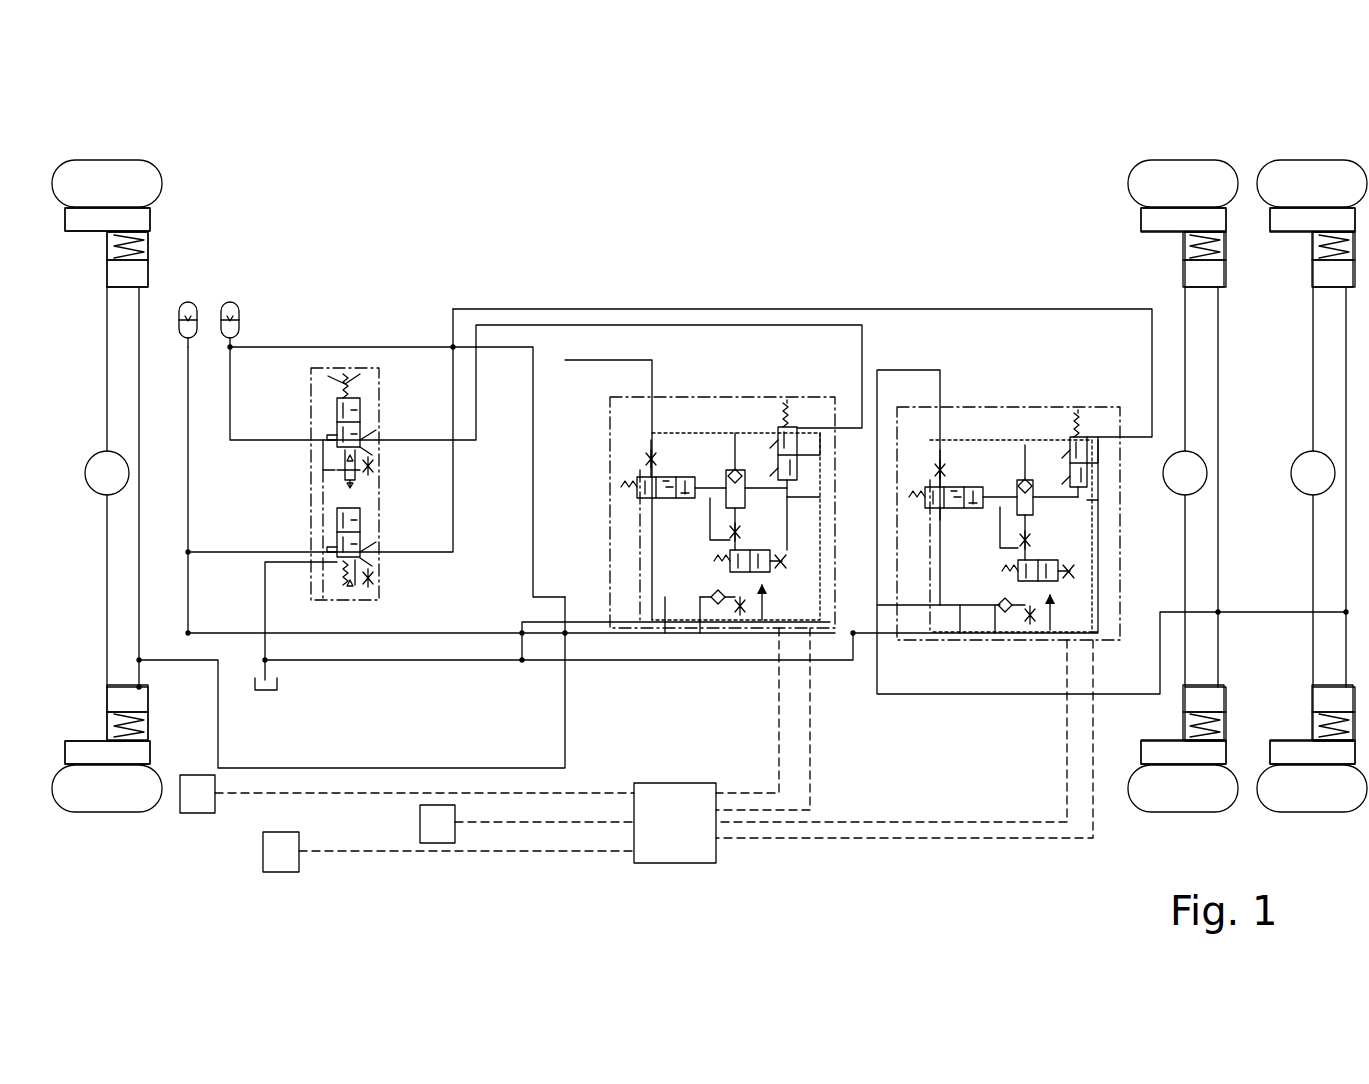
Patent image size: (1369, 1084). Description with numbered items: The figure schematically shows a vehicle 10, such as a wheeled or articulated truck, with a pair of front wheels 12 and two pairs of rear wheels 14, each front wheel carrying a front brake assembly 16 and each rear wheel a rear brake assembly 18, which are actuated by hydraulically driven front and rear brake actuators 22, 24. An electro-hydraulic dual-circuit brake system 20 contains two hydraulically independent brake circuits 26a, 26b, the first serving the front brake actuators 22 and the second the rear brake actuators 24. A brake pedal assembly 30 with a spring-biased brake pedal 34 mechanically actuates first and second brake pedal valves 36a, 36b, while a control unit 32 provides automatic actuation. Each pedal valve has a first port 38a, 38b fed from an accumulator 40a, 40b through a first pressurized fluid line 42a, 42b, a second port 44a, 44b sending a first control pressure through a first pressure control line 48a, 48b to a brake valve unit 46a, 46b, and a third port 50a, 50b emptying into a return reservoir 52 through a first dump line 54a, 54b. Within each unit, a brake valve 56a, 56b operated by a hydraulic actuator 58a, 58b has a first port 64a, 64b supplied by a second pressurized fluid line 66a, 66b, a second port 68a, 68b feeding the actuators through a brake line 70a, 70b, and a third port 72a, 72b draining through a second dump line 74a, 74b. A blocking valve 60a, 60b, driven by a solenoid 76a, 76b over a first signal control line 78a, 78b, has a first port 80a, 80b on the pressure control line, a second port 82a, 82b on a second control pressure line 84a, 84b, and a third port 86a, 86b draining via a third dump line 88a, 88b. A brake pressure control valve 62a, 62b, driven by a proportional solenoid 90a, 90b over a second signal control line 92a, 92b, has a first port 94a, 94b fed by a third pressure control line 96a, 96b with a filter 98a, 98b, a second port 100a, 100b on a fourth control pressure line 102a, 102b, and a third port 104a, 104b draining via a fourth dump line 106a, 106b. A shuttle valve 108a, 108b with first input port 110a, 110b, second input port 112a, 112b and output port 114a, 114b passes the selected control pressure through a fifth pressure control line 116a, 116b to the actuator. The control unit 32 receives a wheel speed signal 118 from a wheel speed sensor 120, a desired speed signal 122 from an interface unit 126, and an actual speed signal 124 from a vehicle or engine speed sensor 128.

The vehicle 10 is at (183, 125).
The front wheel 12 is at (107, 486).
The rear wheel 14 is at (1247, 486).
The front brake assembly 16 is at (135, 212).
The rear brake assembly 18 is at (1222, 215).
The brake system 20 is at (272, 175).
The front brake actuator 22 is at (117, 273).
The rear brake actuator 24 is at (1220, 275).
The first hydraulic brake circuit 26a is at (647, 250).
The second hydraulic brake circuit 26b is at (940, 752).
The brake pedal assembly 30 is at (320, 368).
The control unit 32 is at (675, 823).
The brake pedal 34 is at (355, 380).
The first brake pedal valve 36a is at (337, 412).
The second brake pedal valve 36b is at (337, 528).
The first port of first brake pedal valve 38a is at (337, 440).
The first port of second brake pedal valve 38b is at (337, 553).
The accumulator of first circuit 40a is at (230, 302).
The accumulator of second circuit 40b is at (188, 302).
The first pressurized fluid line of first circuit 42a is at (228, 410).
The first pressurized fluid line of second circuit 42b is at (186, 440).
The second port of first brake pedal valve 44a is at (360, 447).
The second port of second brake pedal valve 44b is at (360, 560).
The brake valve unit of first circuit 46a is at (772, 395).
The brake valve unit of second circuit 46b is at (1062, 400).
The first pressure control line of first circuit 48a is at (612, 325).
The first pressure control line of second circuit 48b is at (960, 309).
The third port of first brake pedal valve 50a is at (337, 452).
The third port of second brake pedal valve 50b is at (340, 572).
The return reservoir 52 is at (265, 692).
The first dump line of first circuit 54a is at (323, 488).
The first dump line of second circuit 54b is at (290, 565).
The brake valve of first circuit 56a is at (630, 487).
The brake valve of second circuit 56b is at (920, 497).
The hydraulic actuator of first brake valve 58a is at (692, 500).
The hydraulic actuator of second brake valve 58b is at (990, 505).
The blocking valve of first circuit 60a is at (797, 395).
The blocking valve of second circuit 60b is at (1085, 400).
The brake pressure control valve of first circuit 62a is at (762, 622).
The brake pressure control valve of second circuit 62b is at (1050, 632).
The first port of first brake valve 64a is at (652, 500).
The first port of second brake valve 64b is at (945, 520).
The second pressurized fluid line of first circuit 66a is at (497, 347).
The second pressurized fluid line of second circuit 66b is at (440, 636).
The second port of first brake valve 68a is at (655, 475).
The second port of second brake valve 68b is at (942, 484).
The brake line of first circuit 70a is at (565, 730).
The brake line of second circuit 70b is at (910, 696).
The third port of first brake valve 72a is at (645, 495).
The third port of second brake valve 72b is at (935, 505).
The second dump line of first circuit 74a is at (640, 548).
The second dump line of second circuit 74b is at (930, 555).
The solenoid of first blocking valve 76a is at (792, 490).
The solenoid of second blocking valve 76b is at (1085, 492).
The first signal control line of first circuit 78a is at (810, 742).
The first signal control line of second circuit 78b is at (875, 843).
The first port of first blocking valve 80a is at (797, 435).
The first port of second blocking valve 80b is at (1087, 445).
The second port of first blocking valve 82a is at (780, 430).
The second port of second blocking valve 82b is at (1072, 440).
The second control pressure line of first circuit 84a is at (735, 468).
The second control pressure line of second circuit 84b is at (1025, 478).
The third port of first blocking valve 86a is at (800, 452).
The third port of second blocking valve 86b is at (1090, 463).
The third dump line of first circuit 88a is at (822, 497).
The third dump line of second circuit 88b is at (1100, 500).
The proportional solenoid of first brake pressure control valve 90a is at (772, 568).
The proportional solenoid of second brake pressure control valve 90b is at (1062, 568).
The second signal control line of first circuit 92a is at (779, 742).
The second signal control line of second circuit 92b is at (928, 840).
The first port of first brake pressure control valve 94a is at (730, 565).
The first port of second brake pressure control valve 94b is at (1018, 575).
The third pressure control line of first circuit 96a is at (665, 620).
The third pressure control line of second circuit 96b is at (960, 636).
The filter of first circuit 98a is at (700, 622).
The filter of second circuit 98b is at (995, 636).
The second port of first brake pressure control valve 100a is at (716, 560).
The second port of second brake pressure control valve 100b is at (1006, 570).
The fourth control pressure line of first circuit 102a is at (737, 512).
The fourth control pressure line of second circuit 102b is at (1027, 522).
The third port of first brake pressure control valve 104a is at (748, 612).
The third port of second brake pressure control valve 104b is at (1035, 622).
The fourth dump line of first circuit 106a is at (735, 604).
The fourth dump line of second circuit 106b is at (1022, 612).
The shuttle valve of first circuit 108a is at (715, 440).
The shuttle valve of second circuit 108b is at (1005, 445).
The first input port of first shuttle valve 110a is at (737, 474).
The first input port of second shuttle valve 110b is at (1027, 483).
The second input port of first shuttle valve 112a is at (766, 492).
The second input port of second shuttle valve 112b is at (1055, 500).
The output port of first shuttle valve 114a is at (720, 532).
The output port of second shuttle valve 114b is at (1010, 540).
The fifth pressure control line of first circuit 116a is at (710, 505).
The fifth pressure control line of second circuit 116b is at (1000, 512).
The wheel speed signal 118 is at (378, 798).
The wheel speed sensor 120 is at (193, 814).
The desired speed signal 122 is at (528, 826).
The actual speed signal 124 is at (475, 855).
The interface unit 126 is at (440, 845).
The vehicle or engine speed sensor 128 is at (278, 874).